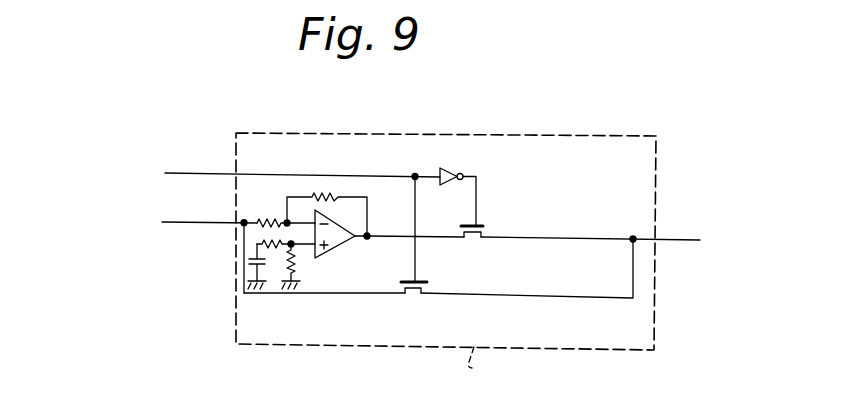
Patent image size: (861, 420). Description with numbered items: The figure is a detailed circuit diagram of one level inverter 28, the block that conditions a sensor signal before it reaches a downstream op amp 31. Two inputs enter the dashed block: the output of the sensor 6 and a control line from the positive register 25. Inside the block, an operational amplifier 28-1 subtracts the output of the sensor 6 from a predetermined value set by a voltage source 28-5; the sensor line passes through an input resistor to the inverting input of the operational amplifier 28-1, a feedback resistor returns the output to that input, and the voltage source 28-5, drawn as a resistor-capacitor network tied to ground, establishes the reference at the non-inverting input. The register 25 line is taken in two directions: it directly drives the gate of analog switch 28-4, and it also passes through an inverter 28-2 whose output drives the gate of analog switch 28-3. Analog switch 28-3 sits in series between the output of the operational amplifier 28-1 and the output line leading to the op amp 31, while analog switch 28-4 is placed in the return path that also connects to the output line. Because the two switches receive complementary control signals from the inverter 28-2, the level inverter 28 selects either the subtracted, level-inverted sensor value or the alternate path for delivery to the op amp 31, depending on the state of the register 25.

The level inverter 28 is at (522, 133).
The positive register 25 is at (243, 153).
The sensor 6 is at (185, 210).
The operational amplifier 28-1 is at (333, 252).
The inverter 28-2 is at (455, 170).
The analog switch 28-3 is at (471, 238).
The analog switch 28-4 is at (410, 292).
The voltage source 28-5 is at (269, 263).
The op amp 31 is at (496, 247).